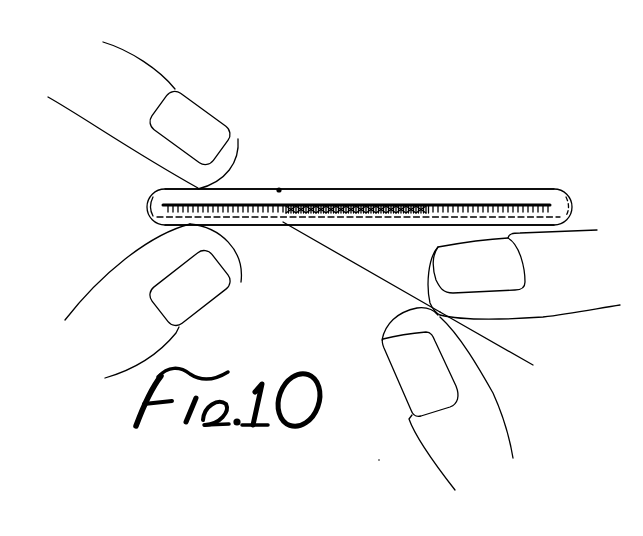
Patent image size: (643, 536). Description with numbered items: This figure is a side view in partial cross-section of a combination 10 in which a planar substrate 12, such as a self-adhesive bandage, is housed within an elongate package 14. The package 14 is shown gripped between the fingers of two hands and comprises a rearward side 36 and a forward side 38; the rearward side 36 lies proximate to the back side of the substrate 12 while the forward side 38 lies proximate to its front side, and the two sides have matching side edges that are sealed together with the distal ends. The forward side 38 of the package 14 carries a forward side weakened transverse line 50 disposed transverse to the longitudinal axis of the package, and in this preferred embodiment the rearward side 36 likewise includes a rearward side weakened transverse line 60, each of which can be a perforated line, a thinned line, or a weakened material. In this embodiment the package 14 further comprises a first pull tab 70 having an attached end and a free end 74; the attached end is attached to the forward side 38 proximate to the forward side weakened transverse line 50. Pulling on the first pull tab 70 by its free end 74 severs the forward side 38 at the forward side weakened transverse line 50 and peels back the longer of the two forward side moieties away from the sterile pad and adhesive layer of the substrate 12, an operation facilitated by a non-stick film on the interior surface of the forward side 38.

The combination 10 is at (405, 135).
The planar substrate 12 is at (323, 205).
The package 14 is at (246, 186).
The rearward side 36 is at (463, 188).
The forward side 38 is at (403, 223).
The forward side weakened transverse line 50 is at (279, 224).
The rearward side weakened transverse line 60 is at (279, 188).
The first pull tab 70 is at (360, 274).
The free end 74 is at (513, 351).